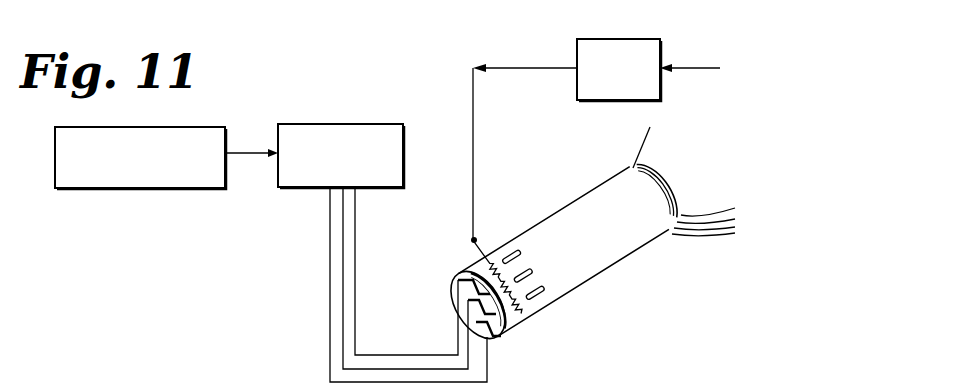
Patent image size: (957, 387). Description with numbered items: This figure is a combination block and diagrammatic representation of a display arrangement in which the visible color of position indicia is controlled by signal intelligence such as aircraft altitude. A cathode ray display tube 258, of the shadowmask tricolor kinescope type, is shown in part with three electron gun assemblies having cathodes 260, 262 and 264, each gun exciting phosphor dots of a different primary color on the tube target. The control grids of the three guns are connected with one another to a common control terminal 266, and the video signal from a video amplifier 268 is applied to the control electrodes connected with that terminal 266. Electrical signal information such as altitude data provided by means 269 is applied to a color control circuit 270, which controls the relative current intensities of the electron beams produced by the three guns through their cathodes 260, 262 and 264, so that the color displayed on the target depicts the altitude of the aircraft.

The cathode ray display tube 258 is at (570, 206).
The cathode 260 is at (457, 281).
The cathode 262 is at (457, 313).
The cathode 264 is at (488, 337).
The common control terminal 266 is at (476, 239).
The video amplifier 268 is at (666, 22).
The altitude data signal means 269 is at (208, 106).
The color control circuit 270 is at (378, 104).